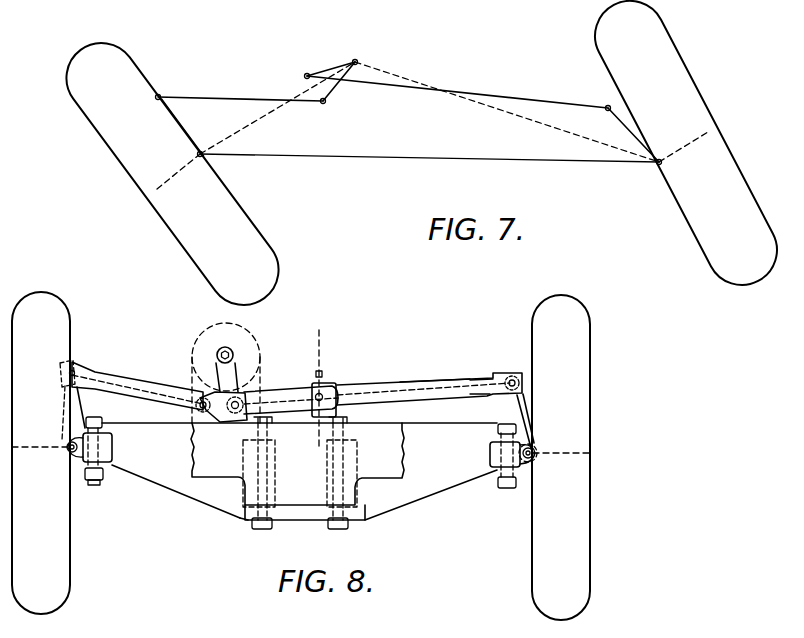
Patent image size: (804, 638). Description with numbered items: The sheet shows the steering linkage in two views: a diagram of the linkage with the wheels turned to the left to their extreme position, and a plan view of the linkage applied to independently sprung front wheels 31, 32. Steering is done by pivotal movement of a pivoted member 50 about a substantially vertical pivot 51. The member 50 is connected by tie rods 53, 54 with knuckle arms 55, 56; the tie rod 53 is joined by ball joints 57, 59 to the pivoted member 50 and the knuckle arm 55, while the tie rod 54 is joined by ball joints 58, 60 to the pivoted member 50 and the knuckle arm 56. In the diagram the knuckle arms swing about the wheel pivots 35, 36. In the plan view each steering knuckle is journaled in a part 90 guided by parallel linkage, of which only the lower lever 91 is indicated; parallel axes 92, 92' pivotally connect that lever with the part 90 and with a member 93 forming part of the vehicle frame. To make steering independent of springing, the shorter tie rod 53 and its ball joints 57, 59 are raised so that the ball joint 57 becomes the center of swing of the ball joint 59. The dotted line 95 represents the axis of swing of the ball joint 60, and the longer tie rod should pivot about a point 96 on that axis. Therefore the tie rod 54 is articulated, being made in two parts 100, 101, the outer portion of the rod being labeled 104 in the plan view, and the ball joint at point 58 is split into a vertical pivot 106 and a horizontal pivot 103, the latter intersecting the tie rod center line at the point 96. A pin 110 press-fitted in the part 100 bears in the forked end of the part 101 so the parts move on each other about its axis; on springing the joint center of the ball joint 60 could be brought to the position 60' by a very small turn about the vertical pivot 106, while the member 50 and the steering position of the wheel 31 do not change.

In FIG. 7, the front wheel 31 is at (187, 207).
In FIG. 8, the front wheel 31 is at (60, 585).
In FIG. 7, the front wheel 32 is at (720, 169).
In FIG. 8, the front wheel 32 is at (580, 599).
In FIG. 7, the left kingpin pivot 35 is at (202, 150).
In FIG. 7, the right kingpin pivot 36 is at (656, 166).
In FIG. 8, the pivoted member 50 is at (221, 382).
In FIG. 7, the vertical pivot 51 is at (358, 62).
In FIG. 7, the tie rod 53 is at (235, 99).
In FIG. 8, the tie rod 53 is at (156, 386).
In FIG. 7, the tie rod 54 is at (512, 97).
In FIG. 7, the knuckle arm 55 is at (177, 120).
In FIG. 8, the knuckle arm 55 is at (78, 410).
In FIG. 7, the knuckle arm 56 is at (622, 124).
In FIG. 8, the knuckle arm 56 is at (519, 411).
In FIG. 7, the ball joint 57 is at (327, 105).
In FIG. 8, the ball joint 57 is at (241, 400).
In FIG. 7, the ball joint 58 is at (306, 75).
In FIG. 8, the ball joint 58 is at (198, 407).
In FIG. 7, the ball joint 59 is at (161, 95).
In FIG. 8, the ball joint 59 is at (75, 372).
In FIG. 7, the ball joint 60 is at (597, 95).
In FIG. 8, the ball joint 60 is at (514, 366).
In FIG. 8, the position of joint center 60' is at (475, 362).
In FIG. 8, the part 90 is at (113, 447).
In FIG. 8, the lower lever 91 is at (180, 487).
In FIG. 8, the axis 92 is at (101, 499).
In FIG. 8, the axis 92' is at (300, 473).
In FIG. 8, the member 93 is at (310, 498).
In FIG. 8, the axis of swing 95 is at (322, 372).
In FIG. 8, the point 96 is at (325, 395).
In FIG. 8, the part of tie rod 100 is at (291, 390).
In FIG. 8, the part of tie rod 101 is at (428, 386).
In FIG. 8, the horizontal pivot 103 is at (340, 408).
In FIG. 8, the tie rod 104 is at (390, 385).
In FIG. 8, the vertical pivot 106 is at (223, 420).
In FIG. 8, the pin 110 is at (300, 433).